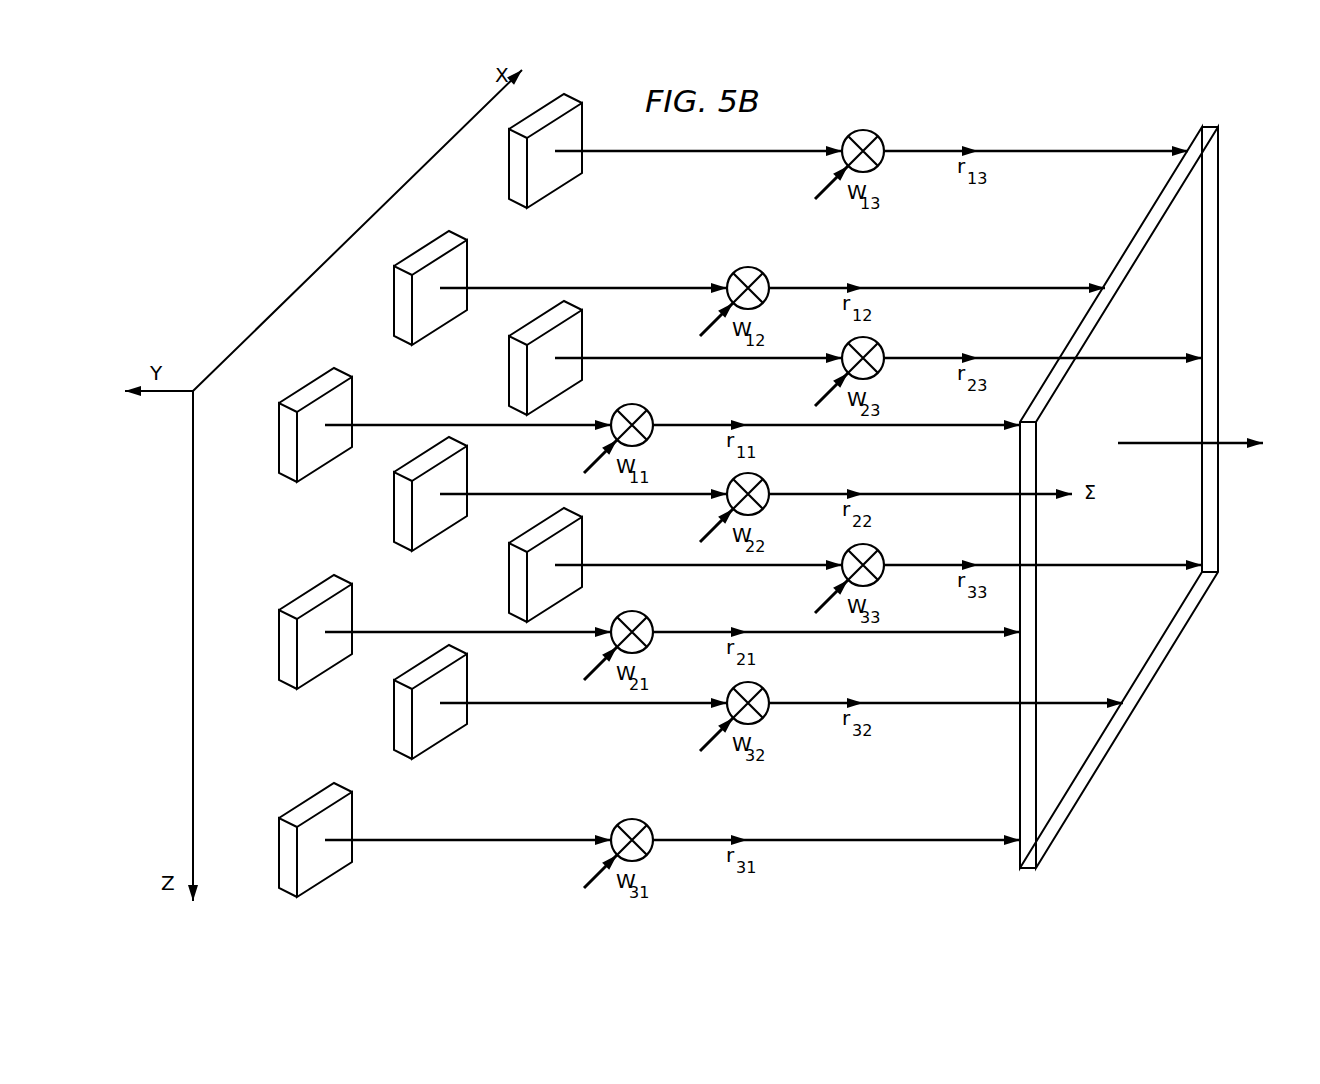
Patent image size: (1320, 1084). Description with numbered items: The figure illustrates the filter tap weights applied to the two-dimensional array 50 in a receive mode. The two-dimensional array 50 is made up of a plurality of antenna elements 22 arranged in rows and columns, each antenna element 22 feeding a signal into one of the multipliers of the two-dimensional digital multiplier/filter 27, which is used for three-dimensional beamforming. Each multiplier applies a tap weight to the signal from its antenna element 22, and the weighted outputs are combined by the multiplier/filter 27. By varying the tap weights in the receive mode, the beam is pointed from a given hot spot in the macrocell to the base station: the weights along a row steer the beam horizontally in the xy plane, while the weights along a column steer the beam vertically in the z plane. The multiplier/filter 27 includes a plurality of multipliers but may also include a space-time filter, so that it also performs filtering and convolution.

The two-dimensional array 50 is at (562, 192).
The antenna element 22 is at (302, 803).
The two-dimensional digital multiplier/filter 27 is at (1152, 685).